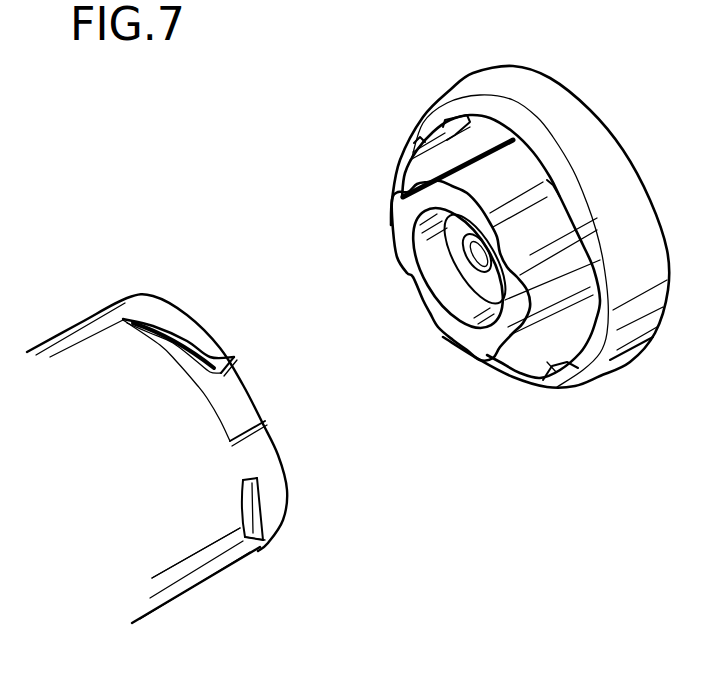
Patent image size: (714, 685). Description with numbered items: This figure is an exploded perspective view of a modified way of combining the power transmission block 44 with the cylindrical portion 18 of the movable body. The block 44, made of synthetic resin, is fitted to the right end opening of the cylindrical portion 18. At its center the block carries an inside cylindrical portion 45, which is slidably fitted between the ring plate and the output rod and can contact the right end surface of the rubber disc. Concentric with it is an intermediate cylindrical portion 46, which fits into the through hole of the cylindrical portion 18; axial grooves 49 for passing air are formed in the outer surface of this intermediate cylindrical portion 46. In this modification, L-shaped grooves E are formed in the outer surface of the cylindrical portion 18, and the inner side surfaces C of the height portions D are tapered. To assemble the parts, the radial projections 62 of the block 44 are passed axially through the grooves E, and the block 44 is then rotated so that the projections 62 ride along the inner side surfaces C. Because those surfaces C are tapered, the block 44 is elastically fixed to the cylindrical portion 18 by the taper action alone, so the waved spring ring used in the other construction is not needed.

The power transmission block 44 is at (484, 94).
The radial projections 62 is at (435, 130).
The inside cylindrical portion 45 is at (450, 248).
The intermediate cylindrical portion 46 is at (470, 338).
The axial grooves 49 is at (513, 235).
The cylindrical portion 18 is at (82, 352).
The inner side surfaces C is at (160, 323).
The height portions D is at (200, 337).
The L-shaped grooves E is at (234, 404).